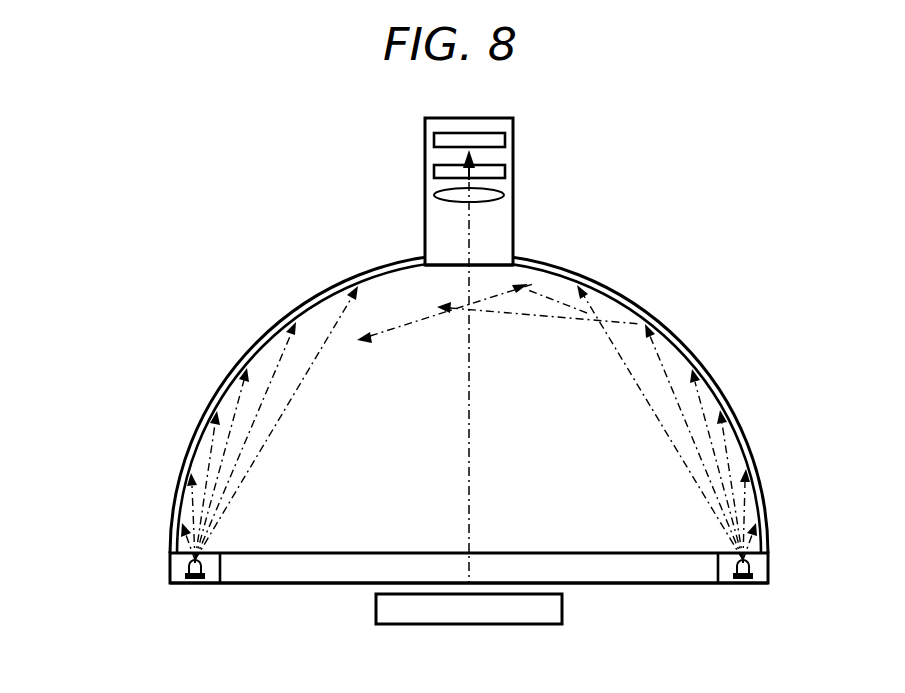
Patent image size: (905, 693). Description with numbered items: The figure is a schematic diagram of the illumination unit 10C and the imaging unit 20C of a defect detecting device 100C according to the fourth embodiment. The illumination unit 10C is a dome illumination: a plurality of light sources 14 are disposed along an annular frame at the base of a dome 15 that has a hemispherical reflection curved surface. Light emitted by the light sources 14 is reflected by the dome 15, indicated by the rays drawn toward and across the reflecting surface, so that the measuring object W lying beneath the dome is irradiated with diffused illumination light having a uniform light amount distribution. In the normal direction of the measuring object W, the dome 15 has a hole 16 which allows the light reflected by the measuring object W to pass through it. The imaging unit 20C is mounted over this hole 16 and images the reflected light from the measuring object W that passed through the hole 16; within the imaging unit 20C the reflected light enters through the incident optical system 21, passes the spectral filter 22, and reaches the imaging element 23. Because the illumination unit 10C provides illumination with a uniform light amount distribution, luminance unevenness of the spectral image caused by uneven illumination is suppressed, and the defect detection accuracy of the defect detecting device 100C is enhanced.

The defect detecting device 100C is at (146, 376).
The illumination unit 10C is at (770, 566).
The light source 14 is at (748, 583).
The dome 15 is at (690, 347).
The hole 16 is at (426, 252).
The imaging unit 20C is at (513, 118).
The incident optical system 21 is at (503, 191).
The spectral filter 22 is at (505, 168).
The imaging element 23 is at (433, 143).
The measuring object W is at (542, 625).